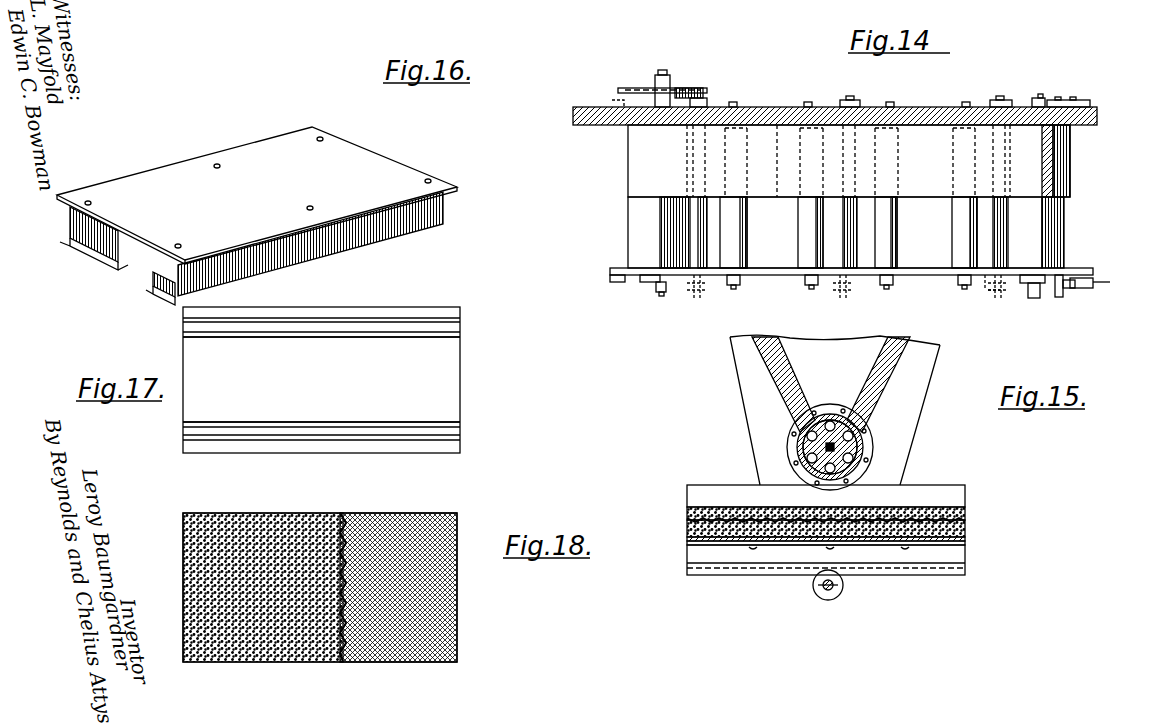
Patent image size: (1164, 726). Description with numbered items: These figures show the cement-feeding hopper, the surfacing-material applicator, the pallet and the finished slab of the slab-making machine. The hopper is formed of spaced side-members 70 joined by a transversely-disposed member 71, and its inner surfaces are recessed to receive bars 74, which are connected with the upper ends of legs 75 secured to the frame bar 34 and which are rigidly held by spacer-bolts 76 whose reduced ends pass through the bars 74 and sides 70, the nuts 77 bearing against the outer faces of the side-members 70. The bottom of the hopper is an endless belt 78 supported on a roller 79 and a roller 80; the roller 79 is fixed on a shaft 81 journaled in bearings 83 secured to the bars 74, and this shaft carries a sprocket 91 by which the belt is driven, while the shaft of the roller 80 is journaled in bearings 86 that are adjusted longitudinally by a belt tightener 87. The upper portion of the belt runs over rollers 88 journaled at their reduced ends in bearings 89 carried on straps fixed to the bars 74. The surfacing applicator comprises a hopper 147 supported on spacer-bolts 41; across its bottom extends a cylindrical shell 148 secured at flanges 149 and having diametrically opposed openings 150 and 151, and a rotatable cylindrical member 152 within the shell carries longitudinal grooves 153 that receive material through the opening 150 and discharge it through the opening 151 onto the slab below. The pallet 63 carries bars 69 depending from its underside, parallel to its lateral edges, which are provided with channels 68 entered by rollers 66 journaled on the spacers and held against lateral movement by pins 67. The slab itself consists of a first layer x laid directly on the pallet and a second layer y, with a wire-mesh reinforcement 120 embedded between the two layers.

In FIG. 14, the side-members 70 is at (573, 116).
In FIG. 14, the transversely-disposed member 71 is at (1060, 157).
In FIG. 14, the bars 74 is at (790, 168).
In FIG. 14, the legs 75 is at (618, 103).
In FIG. 14, the spacer-bolts 76 is at (850, 98).
In FIG. 14, the nuts 77 is at (988, 106).
In FIG. 14, the endless belt 78 is at (628, 170).
In FIG. 14, the roller 79 is at (636, 220).
In FIG. 14, the roller 80 is at (1056, 220).
In FIG. 14, the shaft 81 is at (663, 75).
In FIG. 14, the bearings 83 is at (685, 88).
In FIG. 14, the bearings 86 is at (1045, 98).
In FIG. 14, the belt tightener 87 is at (1070, 100).
In FIG. 14, the rollers 88 is at (742, 205).
In FIG. 14, the bearings 89 is at (805, 103).
In FIG. 14, the sprocket 91 is at (645, 88).
In FIG. 16, the pallets 63 is at (257, 195).
In FIG. 17, the pallets 63 is at (321, 380).
In FIG. 15, the pallets 63 is at (878, 541).
In FIG. 16, the channels 68 is at (78, 246).
In FIG. 17, the channels 68 is at (460, 330).
In FIG. 16, the bars 69 is at (70, 222).
In FIG. 17, the bars 69 is at (400, 338).
In FIG. 15, the bars 69 is at (940, 560).
In FIG. 18, the second layer y is at (287, 530).
In FIG. 15, the second layer y is at (963, 512).
In FIG. 18, the first layer x is at (457, 603).
In FIG. 15, the first layer x is at (965, 536).
In FIG. 18, the reinforcing members 120 is at (387, 523).
In FIG. 15, the reinforcing members 120 is at (965, 526).
In FIG. 15, the hopper 147 is at (766, 372).
In FIG. 15, the cylindrical shell 148 is at (798, 452).
In FIG. 15, the flanges 149 is at (868, 440).
In FIG. 15, the opening 150 is at (832, 412).
In FIG. 15, the opening 151 is at (840, 487).
In FIG. 15, the rotatable cylindrical member 152 is at (790, 462).
In FIG. 15, the grooves 153 is at (872, 462).
In FIG. 15, the side member 34 is at (958, 493).
In FIG. 15, the spacer-bolts 41 is at (824, 590).
In FIG. 15, the rollers 66 is at (838, 596).
In FIG. 15, the pins 67 is at (815, 587).